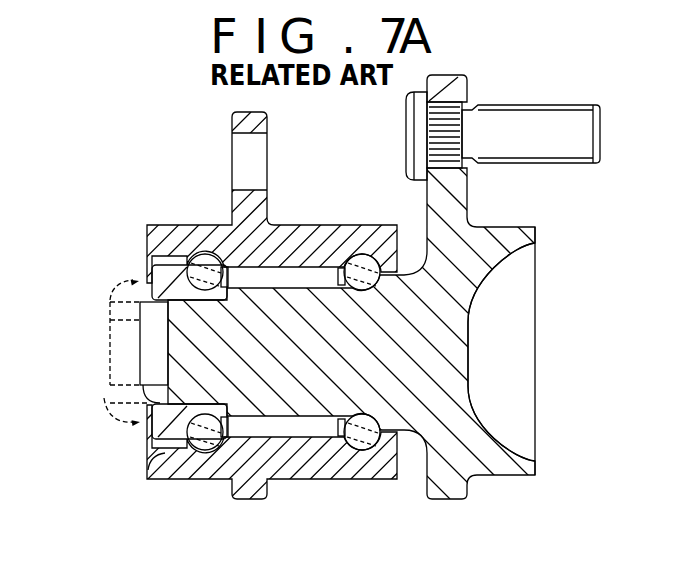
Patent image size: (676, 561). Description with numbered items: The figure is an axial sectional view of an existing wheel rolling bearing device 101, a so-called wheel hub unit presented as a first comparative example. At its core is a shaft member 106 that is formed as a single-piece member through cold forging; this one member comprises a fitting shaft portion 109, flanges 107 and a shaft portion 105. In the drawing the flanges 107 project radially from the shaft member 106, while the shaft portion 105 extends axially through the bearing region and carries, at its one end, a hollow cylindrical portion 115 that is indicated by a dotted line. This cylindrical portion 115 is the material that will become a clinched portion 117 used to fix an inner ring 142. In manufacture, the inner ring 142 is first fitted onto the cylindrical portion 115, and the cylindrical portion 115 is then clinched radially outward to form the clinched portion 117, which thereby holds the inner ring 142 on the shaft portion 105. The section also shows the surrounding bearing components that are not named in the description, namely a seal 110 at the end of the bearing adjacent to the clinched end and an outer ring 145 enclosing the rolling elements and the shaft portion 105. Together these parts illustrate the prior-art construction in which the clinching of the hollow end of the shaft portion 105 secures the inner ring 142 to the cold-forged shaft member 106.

The wheel rolling bearing device 101 is at (132, 190).
The shaft portion 105 is at (300, 302).
The shaft member 106 is at (442, 300).
The flanges 107 is at (468, 91).
The fitting shaft portion 109 is at (536, 229).
The outer seal 110 is at (148, 283).
The hollow cylindrical portion 115 is at (98, 395).
The clinched portion 117 is at (122, 330).
The inner ring 142 is at (160, 455).
The outer ring 145 is at (338, 481).